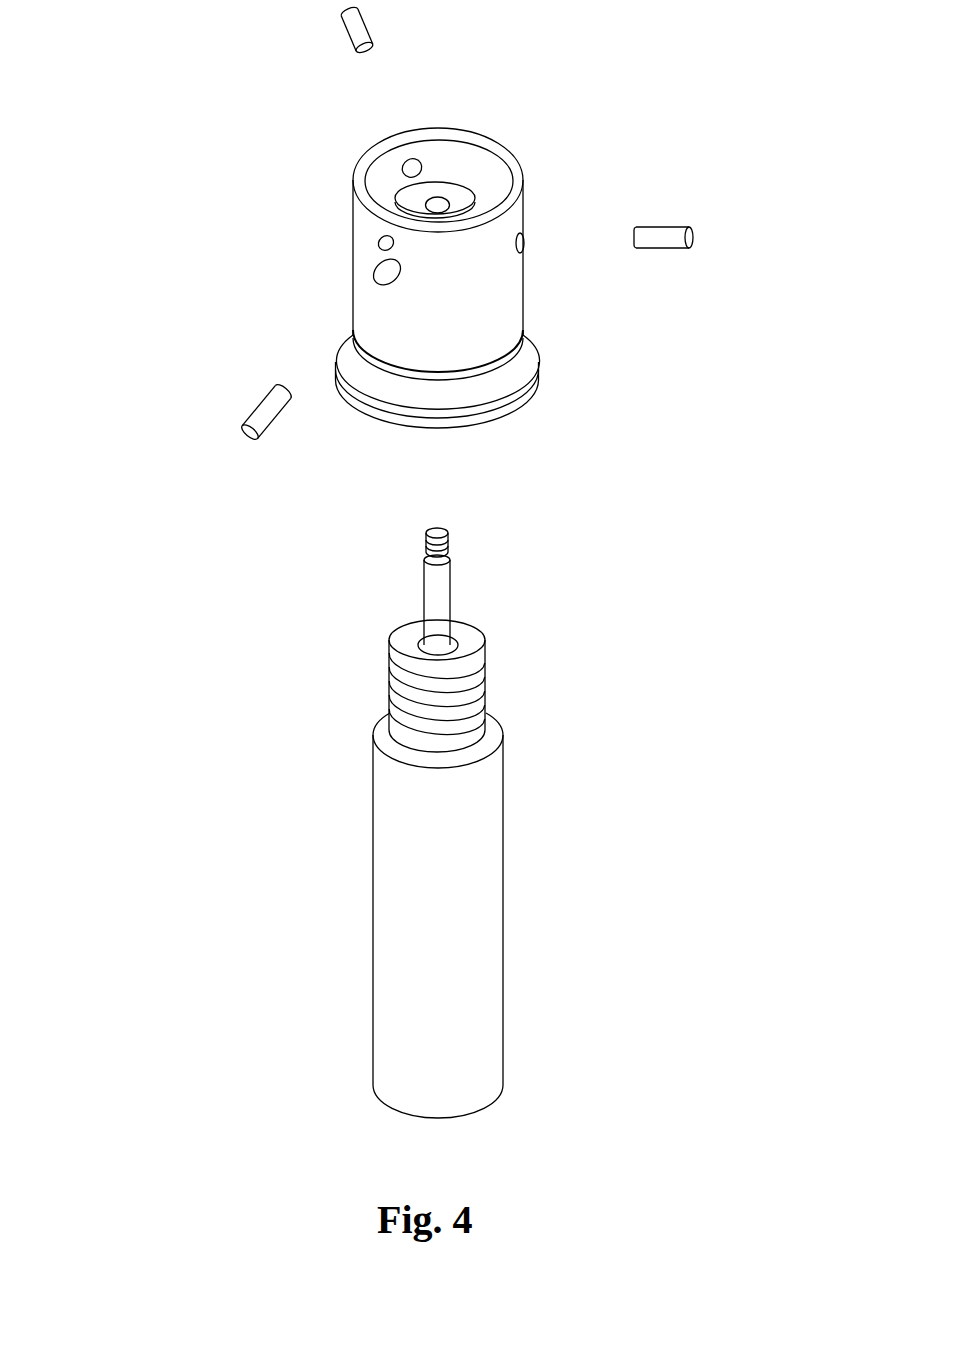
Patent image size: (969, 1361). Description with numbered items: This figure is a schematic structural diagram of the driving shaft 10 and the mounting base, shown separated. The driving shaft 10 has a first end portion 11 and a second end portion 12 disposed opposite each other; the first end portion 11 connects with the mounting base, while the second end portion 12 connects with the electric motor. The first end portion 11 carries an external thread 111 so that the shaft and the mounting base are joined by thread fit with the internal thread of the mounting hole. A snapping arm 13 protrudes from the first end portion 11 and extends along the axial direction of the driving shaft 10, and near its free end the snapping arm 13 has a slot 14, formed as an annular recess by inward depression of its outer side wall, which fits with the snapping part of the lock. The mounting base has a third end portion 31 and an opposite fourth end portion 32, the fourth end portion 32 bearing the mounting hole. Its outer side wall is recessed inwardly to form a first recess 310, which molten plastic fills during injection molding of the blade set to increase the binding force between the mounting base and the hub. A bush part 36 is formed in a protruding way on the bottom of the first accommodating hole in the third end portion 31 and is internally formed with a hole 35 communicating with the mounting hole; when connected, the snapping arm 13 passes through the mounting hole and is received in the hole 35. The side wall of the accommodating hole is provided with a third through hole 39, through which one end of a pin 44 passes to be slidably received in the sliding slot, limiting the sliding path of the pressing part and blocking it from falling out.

The driving shaft 10 is at (540, 922).
The first end portion 11 is at (492, 679).
The external thread 111 is at (396, 700).
The second end portion 12 is at (453, 1077).
The snapping arm 13 is at (453, 605).
The slot 14 is at (448, 556).
The third end portion 31 is at (522, 207).
The first recess 310 is at (524, 335).
The fourth end portion 32 is at (538, 393).
The hole 35 is at (455, 200).
The bush part 36 is at (437, 200).
The third through hole 39 is at (522, 240).
The pin 44 is at (362, 27).